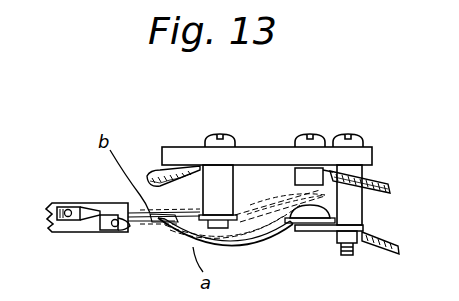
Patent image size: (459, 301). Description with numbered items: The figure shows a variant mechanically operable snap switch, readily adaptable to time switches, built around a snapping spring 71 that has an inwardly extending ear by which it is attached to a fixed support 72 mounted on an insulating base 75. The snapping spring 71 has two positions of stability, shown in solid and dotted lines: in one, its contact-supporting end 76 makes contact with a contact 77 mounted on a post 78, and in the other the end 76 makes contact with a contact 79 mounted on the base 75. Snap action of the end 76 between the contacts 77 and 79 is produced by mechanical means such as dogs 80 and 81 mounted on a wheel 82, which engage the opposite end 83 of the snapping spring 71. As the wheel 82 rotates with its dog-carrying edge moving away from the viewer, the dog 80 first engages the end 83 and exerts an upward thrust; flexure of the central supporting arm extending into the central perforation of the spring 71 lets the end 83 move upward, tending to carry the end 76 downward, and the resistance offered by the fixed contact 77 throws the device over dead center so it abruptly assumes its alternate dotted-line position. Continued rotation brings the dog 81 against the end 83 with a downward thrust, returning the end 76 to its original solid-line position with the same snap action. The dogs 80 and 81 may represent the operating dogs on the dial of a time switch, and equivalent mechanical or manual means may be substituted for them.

The snapping spring 71 is at (247, 245).
The fixed support 72 is at (203, 192).
The insulating base 75 is at (175, 146).
The contact-supporting end 76 is at (296, 233).
The contact 77 is at (313, 236).
The post 78 is at (363, 201).
The contact 79 is at (295, 178).
The dog 80 is at (118, 231).
The dog 81 is at (84, 204).
The wheel 82 is at (58, 203).
The end 83 is at (155, 218).